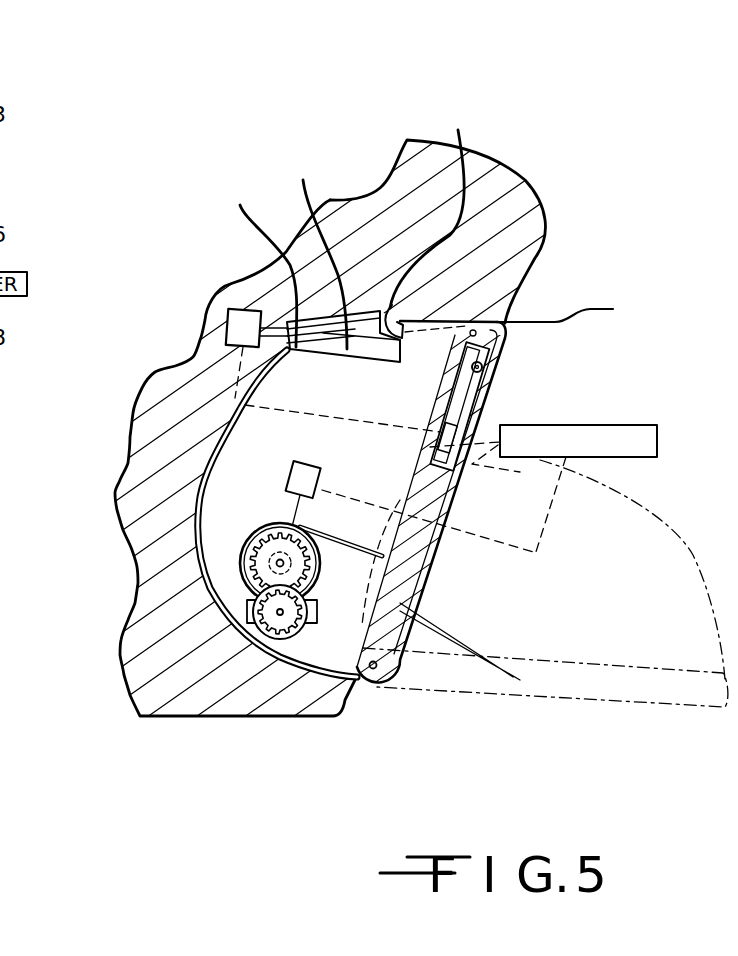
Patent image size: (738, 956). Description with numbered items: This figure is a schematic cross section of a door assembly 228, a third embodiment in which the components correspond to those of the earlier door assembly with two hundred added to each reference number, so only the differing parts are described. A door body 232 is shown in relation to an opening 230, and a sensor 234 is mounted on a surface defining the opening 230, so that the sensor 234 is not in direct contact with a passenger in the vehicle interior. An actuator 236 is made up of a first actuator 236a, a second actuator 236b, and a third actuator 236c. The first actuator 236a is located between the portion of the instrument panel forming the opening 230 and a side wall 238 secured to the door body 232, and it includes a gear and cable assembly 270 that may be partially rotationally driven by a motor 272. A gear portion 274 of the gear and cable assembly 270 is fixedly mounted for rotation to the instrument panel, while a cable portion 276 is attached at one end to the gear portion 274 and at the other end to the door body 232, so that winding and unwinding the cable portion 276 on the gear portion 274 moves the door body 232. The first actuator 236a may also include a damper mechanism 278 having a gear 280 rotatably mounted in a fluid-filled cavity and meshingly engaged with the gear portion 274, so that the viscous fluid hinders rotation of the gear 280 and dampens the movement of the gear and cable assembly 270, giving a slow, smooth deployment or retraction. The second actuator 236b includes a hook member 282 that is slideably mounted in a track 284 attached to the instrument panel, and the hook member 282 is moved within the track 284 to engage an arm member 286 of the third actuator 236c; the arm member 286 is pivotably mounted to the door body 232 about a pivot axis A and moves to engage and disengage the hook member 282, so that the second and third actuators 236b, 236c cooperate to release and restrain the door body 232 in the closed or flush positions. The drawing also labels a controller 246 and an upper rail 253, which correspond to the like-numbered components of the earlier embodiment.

The door assembly 228 is at (558, 149).
The opening 230 is at (232, 420).
The door body 232 is at (440, 541).
The sensor 234 is at (480, 347).
The actuator 236 is at (572, 285).
The first actuator 236a is at (241, 547).
The second actuator 236b is at (216, 328).
The third actuator 236c is at (464, 437).
The side wall 238 is at (227, 474).
The controller 246 is at (633, 425).
The upper rail 253 is at (582, 308).
The gear and cable assembly 270 is at (254, 524).
The motor 272 is at (288, 470).
The gear portion 274 is at (252, 566).
The cable portion 276 is at (397, 597).
The damper mechanism 278 is at (312, 618).
The gear 280 is at (290, 628).
The hook member 282 is at (343, 259).
The track 284 is at (257, 259).
The arm member 286 is at (434, 222).
The pivot axis A is at (377, 665).